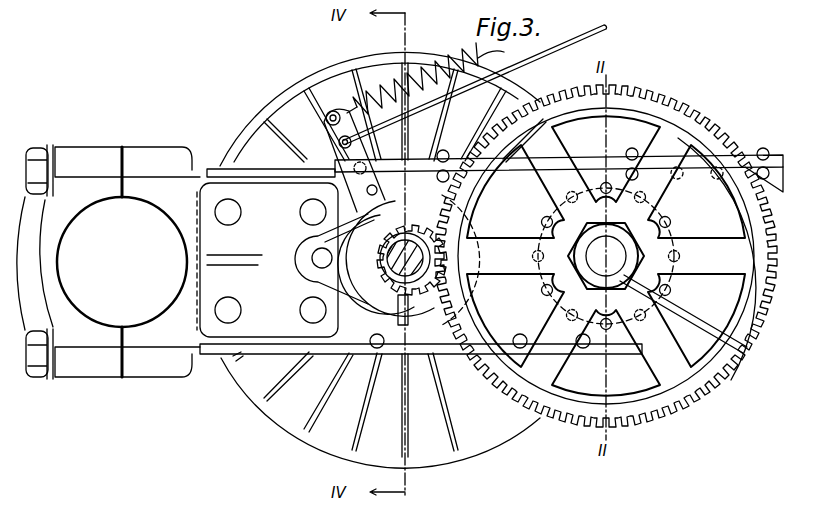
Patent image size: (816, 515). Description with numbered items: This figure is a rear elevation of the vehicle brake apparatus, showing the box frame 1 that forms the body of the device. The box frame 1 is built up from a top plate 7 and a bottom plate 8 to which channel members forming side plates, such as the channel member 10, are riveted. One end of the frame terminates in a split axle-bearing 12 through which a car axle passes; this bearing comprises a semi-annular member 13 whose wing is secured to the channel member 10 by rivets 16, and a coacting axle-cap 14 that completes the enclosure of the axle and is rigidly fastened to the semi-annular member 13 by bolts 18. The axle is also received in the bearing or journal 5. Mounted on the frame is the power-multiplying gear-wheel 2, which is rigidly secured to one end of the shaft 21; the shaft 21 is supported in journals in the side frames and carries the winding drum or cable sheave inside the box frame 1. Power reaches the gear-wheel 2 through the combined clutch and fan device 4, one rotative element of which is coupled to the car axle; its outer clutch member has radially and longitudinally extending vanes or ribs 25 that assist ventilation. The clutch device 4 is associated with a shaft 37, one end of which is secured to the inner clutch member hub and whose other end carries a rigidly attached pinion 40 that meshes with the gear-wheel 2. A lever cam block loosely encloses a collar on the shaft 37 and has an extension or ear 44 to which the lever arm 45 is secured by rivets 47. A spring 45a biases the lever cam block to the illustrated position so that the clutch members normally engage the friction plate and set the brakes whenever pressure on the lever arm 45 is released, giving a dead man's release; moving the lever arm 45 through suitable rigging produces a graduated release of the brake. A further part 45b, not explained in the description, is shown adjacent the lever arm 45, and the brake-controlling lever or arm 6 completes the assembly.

The box frame 1 is at (762, 152).
The power-multiplying gear-wheel 2 is at (672, 96).
The combined clutch and fan device 4 is at (284, 99).
The bearing or journal 5 is at (105, 318).
The brake-controlling lever or arm 6 is at (331, 110).
The top plate 7 is at (270, 169).
The bottom plate 8 is at (226, 356).
The channel member 10 is at (742, 348).
The split axle-bearing 12 is at (77, 147).
The semi-annular member 13 is at (150, 150).
The axle-cap 14 is at (48, 218).
The rivets 16 is at (222, 205).
The bolts 18 is at (40, 150).
The shaft 21 is at (731, 382).
The vanes or ribs 25 is at (300, 425).
The shaft 37 is at (396, 270).
The pinion 40 is at (414, 297).
The extension or ear 44 is at (403, 168).
The lever arm 45 is at (338, 142).
The spring 45a is at (470, 52).
The rod 45b is at (605, 26).
The rivets 47 is at (375, 185).